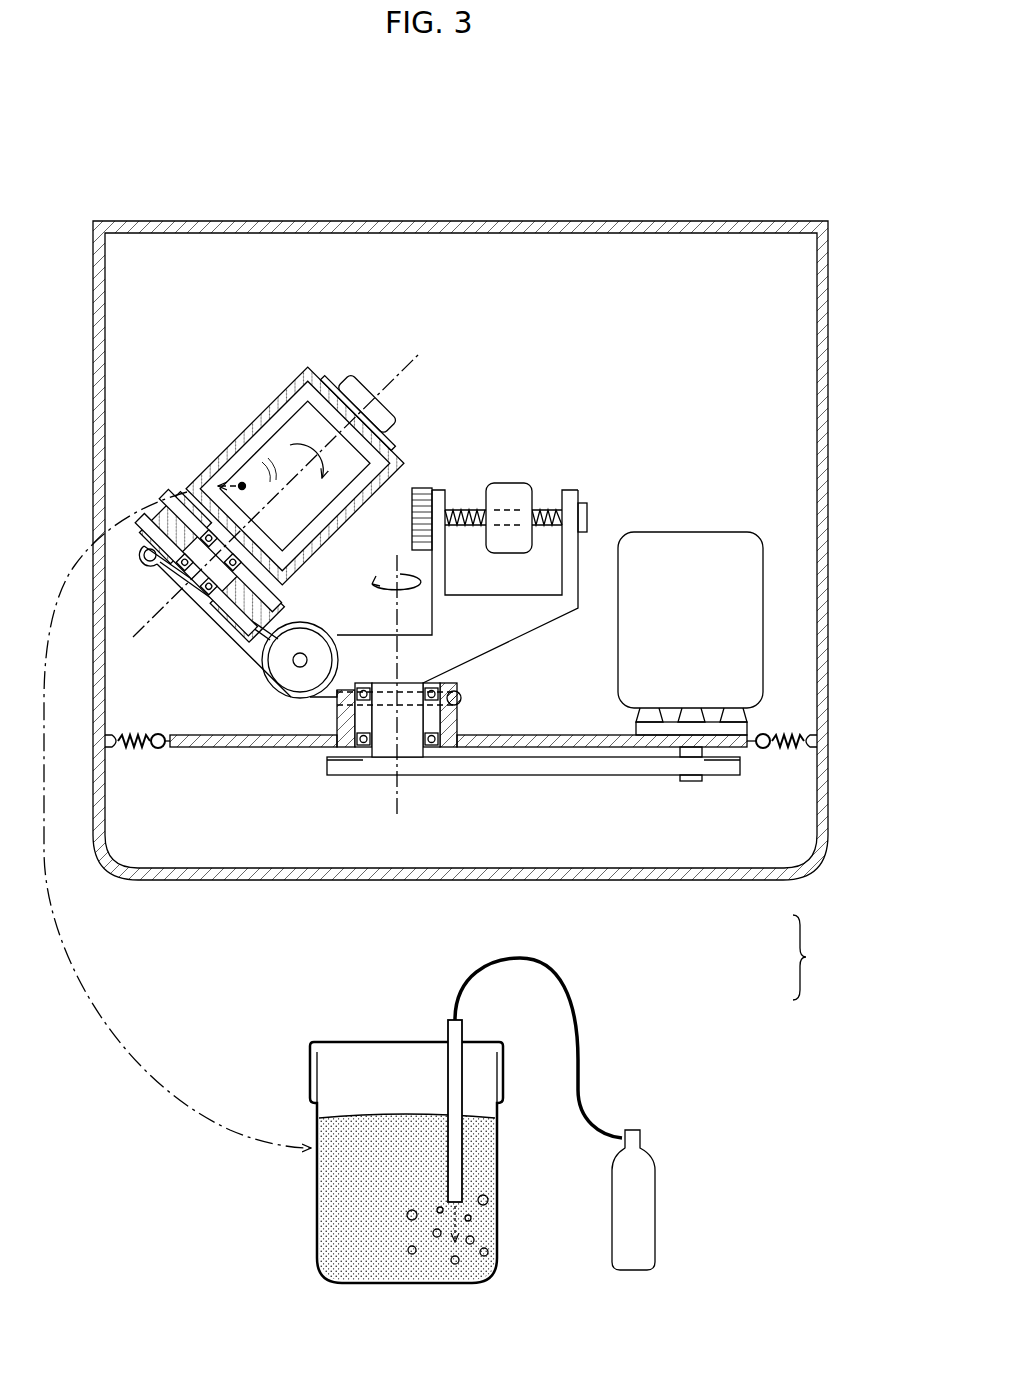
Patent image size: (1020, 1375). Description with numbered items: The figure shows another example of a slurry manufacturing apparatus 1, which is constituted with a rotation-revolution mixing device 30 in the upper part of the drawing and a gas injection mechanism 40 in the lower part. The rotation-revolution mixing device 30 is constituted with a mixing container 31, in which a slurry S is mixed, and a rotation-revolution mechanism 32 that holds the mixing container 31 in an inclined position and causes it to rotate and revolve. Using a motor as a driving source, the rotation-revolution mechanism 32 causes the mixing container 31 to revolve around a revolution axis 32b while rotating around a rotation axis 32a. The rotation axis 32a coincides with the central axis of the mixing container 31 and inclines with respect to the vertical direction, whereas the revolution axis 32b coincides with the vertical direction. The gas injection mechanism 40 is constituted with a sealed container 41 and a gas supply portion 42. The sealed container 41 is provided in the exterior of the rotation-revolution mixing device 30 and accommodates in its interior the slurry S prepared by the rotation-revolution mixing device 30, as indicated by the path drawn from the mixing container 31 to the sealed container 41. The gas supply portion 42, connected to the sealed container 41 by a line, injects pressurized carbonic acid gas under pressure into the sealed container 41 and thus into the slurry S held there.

The slurry manufacturing apparatus 1 is at (811, 957).
The rotation-revolution mixing device 30 is at (676, 890).
The mixing container 31 is at (296, 384).
The rotation-revolution mechanism 32 is at (634, 430).
The rotation axis 32a is at (417, 353).
The revolution axis 32b is at (397, 793).
The gas injection mechanism 40 is at (550, 1120).
The sealed container 41 is at (396, 1040).
The gas supply portion 42 is at (658, 1204).
The slurry S is at (246, 476).